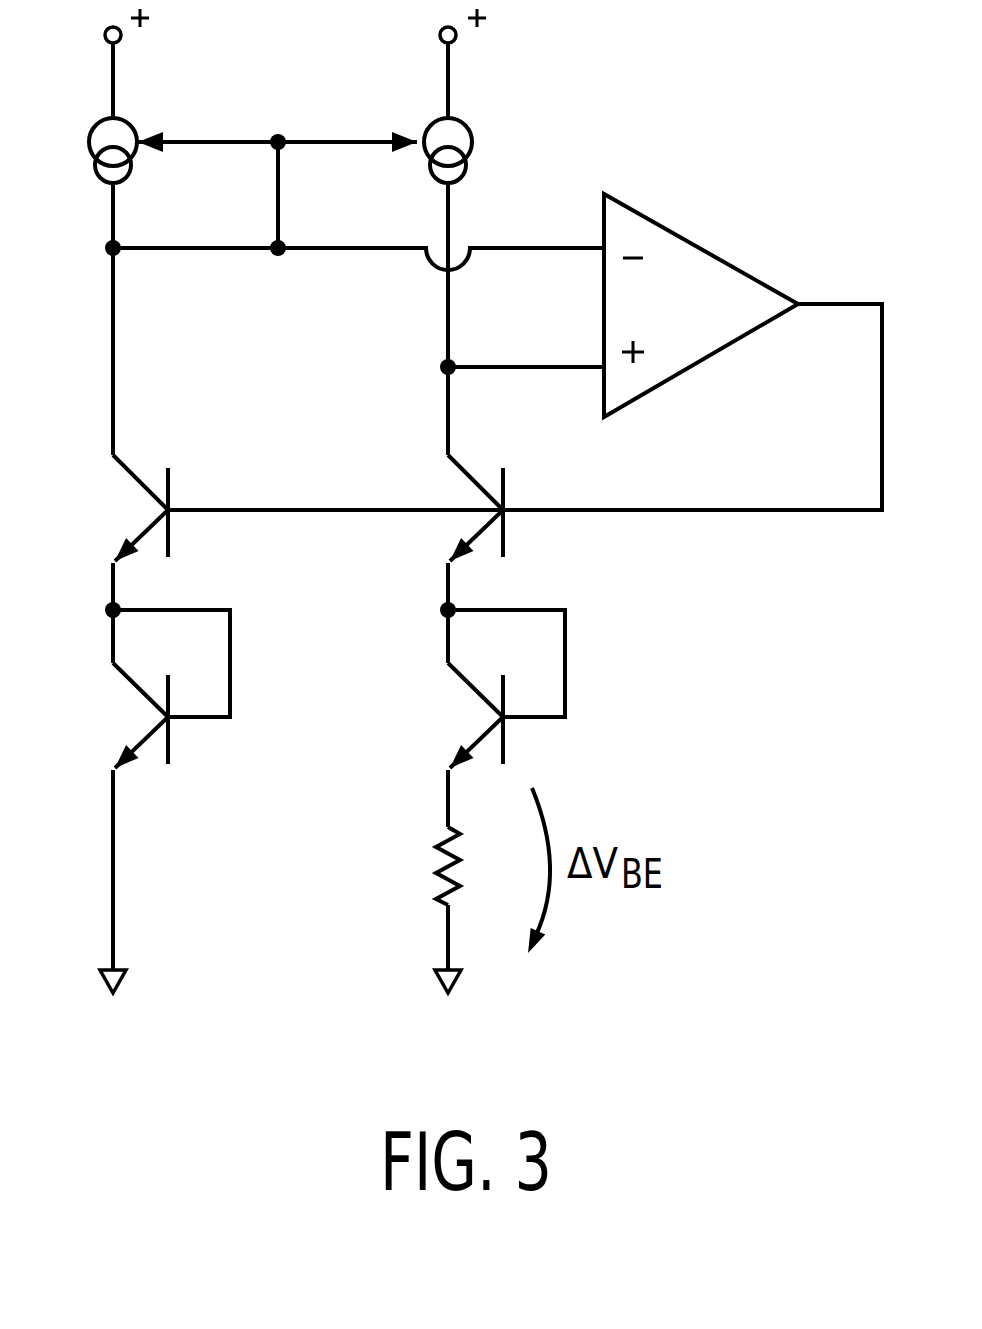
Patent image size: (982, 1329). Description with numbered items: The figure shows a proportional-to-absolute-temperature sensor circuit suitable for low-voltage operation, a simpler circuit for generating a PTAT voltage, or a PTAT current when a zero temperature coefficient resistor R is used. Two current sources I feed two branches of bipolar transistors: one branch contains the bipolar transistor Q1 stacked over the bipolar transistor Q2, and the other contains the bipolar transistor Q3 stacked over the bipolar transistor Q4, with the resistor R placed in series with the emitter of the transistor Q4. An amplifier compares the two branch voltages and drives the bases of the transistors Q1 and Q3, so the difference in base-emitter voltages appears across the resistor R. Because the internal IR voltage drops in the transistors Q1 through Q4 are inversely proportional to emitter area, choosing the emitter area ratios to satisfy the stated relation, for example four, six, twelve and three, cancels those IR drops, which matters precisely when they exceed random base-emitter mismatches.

The bipolar transistor Q1 is at (100, 513).
The bipolar transistor Q2 is at (100, 714).
The bipolar transistor Q3 is at (436, 513).
The bipolar transistor Q4 is at (436, 714).
The resistor R is at (467, 866).
The current source I is at (66, 123).